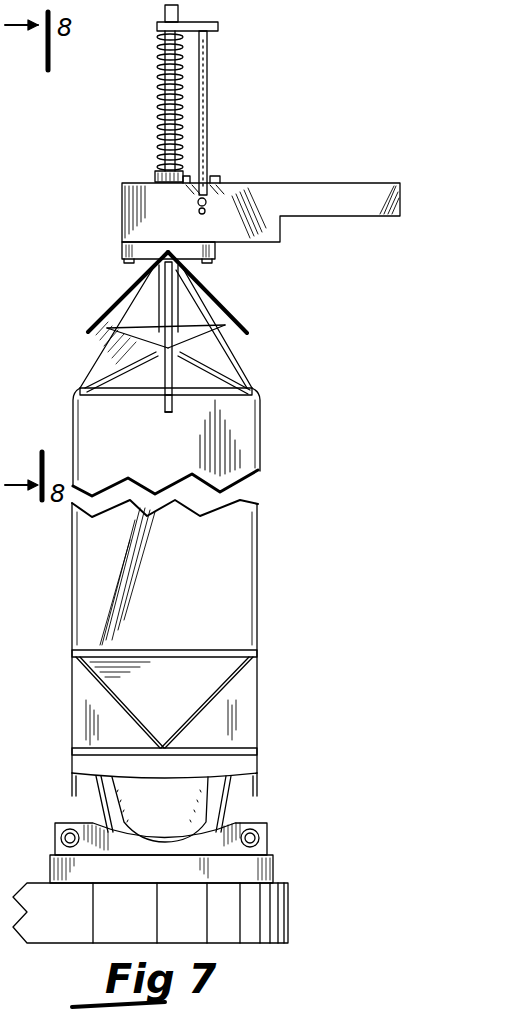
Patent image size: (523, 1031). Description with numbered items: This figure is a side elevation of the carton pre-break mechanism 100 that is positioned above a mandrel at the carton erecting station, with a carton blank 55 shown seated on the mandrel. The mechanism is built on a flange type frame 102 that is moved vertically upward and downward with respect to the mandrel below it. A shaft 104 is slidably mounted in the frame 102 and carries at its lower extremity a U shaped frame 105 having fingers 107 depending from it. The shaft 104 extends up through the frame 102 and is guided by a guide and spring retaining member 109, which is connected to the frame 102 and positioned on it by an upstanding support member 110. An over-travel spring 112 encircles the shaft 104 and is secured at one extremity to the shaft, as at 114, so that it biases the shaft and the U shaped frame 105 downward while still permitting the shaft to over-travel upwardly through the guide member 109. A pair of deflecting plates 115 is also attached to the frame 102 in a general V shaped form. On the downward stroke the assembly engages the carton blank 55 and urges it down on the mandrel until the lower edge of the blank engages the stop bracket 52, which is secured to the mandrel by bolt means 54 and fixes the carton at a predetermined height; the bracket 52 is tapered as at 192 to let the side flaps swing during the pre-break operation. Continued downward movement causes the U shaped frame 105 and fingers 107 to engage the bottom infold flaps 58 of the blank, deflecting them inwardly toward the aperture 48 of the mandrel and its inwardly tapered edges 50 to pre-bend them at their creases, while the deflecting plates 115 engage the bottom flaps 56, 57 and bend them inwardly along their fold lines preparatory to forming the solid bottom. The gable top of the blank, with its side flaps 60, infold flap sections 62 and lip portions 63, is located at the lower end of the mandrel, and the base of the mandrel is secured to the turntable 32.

The pre-break mechanism 100 is at (268, 61).
The flange type frame 102 is at (258, 184).
The shaft 104 is at (162, 111).
The U shaped frame 105 is at (165, 304).
The fingers 107 is at (165, 408).
The guide and spring retaining member 109 is at (218, 26).
The upstanding support member 110 is at (209, 126).
The over-travel spring 112 is at (160, 80).
The spring securing point 114 is at (155, 173).
The deflecting plates 115 is at (238, 292).
The turntable 32 is at (288, 899).
The aperture 48 is at (172, 819).
The tapered edge 50 is at (108, 782).
The supporting bracket 52 is at (240, 826).
The bolt means 54 is at (60, 838).
The carton blank 55 is at (262, 452).
The bottom flap 56 is at (243, 364).
The bottom flap 57 is at (88, 364).
The bottom infold flaps 58 is at (210, 386).
The side flaps 60 is at (72, 716).
The infold flap sections 62 is at (176, 698).
The lip portions 63 is at (72, 792).
The taper 192 is at (158, 838).